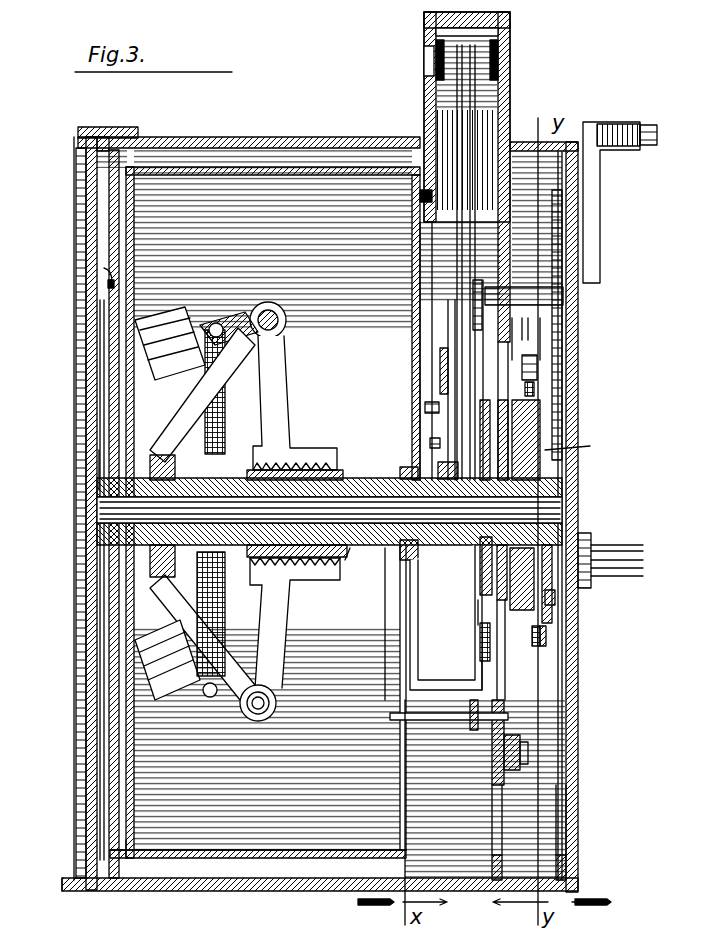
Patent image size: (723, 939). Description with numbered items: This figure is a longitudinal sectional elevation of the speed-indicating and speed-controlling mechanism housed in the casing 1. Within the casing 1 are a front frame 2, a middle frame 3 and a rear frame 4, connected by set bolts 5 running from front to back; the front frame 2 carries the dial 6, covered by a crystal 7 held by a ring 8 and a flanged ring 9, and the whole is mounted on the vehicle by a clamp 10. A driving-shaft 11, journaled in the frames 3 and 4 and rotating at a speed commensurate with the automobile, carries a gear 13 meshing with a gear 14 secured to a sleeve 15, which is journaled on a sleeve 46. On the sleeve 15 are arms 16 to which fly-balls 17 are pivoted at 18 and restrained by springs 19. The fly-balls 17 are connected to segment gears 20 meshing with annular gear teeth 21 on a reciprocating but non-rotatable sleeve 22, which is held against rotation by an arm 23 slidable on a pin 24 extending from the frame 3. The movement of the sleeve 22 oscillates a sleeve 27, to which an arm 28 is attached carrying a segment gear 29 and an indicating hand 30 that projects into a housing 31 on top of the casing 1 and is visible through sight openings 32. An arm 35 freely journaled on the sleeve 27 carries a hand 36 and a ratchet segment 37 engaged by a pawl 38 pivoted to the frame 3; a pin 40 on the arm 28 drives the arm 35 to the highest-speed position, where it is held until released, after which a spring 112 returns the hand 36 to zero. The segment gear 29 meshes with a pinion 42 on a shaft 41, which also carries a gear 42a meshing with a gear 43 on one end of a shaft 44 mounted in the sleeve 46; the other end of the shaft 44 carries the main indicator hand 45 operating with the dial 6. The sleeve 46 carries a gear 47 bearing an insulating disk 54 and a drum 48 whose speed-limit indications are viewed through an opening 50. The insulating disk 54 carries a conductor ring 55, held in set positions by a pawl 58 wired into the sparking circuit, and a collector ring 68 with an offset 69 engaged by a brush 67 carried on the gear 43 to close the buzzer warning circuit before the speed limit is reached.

The casing 1 is at (332, 118).
The front frame 2 is at (150, 800).
The middle frame 3 is at (518, 146).
The rear frame 4 is at (580, 166).
The set bolts 5 is at (412, 262).
The dial 6 is at (86, 803).
The crystal 7 is at (90, 384).
The ring 8 is at (110, 136).
The flanged ring 9 is at (140, 150).
The clamp 10 is at (615, 128).
The driving-shaft 11 is at (612, 552).
The gear 13 is at (486, 662).
The gear 14 is at (478, 625).
The sleeve 15 is at (350, 552).
The arms 16 is at (200, 395).
The fly-balls 17 is at (170, 320).
The pivots 18 is at (286, 324).
The springs 19 is at (227, 410).
The segment gears 20 is at (280, 378).
The annular gear teeth 21 is at (330, 570).
The sleeve 22 is at (355, 480).
The arm 23 is at (410, 628).
The pin 24 is at (418, 722).
The oscillating sleeve 27 is at (385, 562).
The arm 28 is at (470, 450).
The segment gear 29 is at (478, 340).
The indicating hand 30 is at (475, 107).
The housing 31 is at (425, 30).
The sight openings 32 is at (427, 60).
The arm 35 is at (445, 420).
The indicating hand 36 is at (457, 97).
The ratchet segment 37 is at (443, 372).
The pawl 38 is at (440, 354).
The pin 40 is at (448, 424).
The shaft 41 is at (585, 300).
The pinion 42 is at (485, 278).
The gear 42a is at (562, 355).
The gear 43 is at (545, 470).
The shaft 44 is at (556, 516).
The main indicator hand 45 is at (101, 450).
The sleeve 46 is at (445, 552).
The gear 47 is at (520, 640).
The drum 48 is at (200, 860).
The opening 50 is at (106, 277).
The insulating disk 54 is at (518, 598).
The conductor ring 55 is at (540, 420).
The pawl 58 is at (547, 395).
The brush 67 is at (546, 645).
The collector ring 68 is at (548, 598).
The offset 69 is at (612, 445).
The spring 112 is at (430, 396).